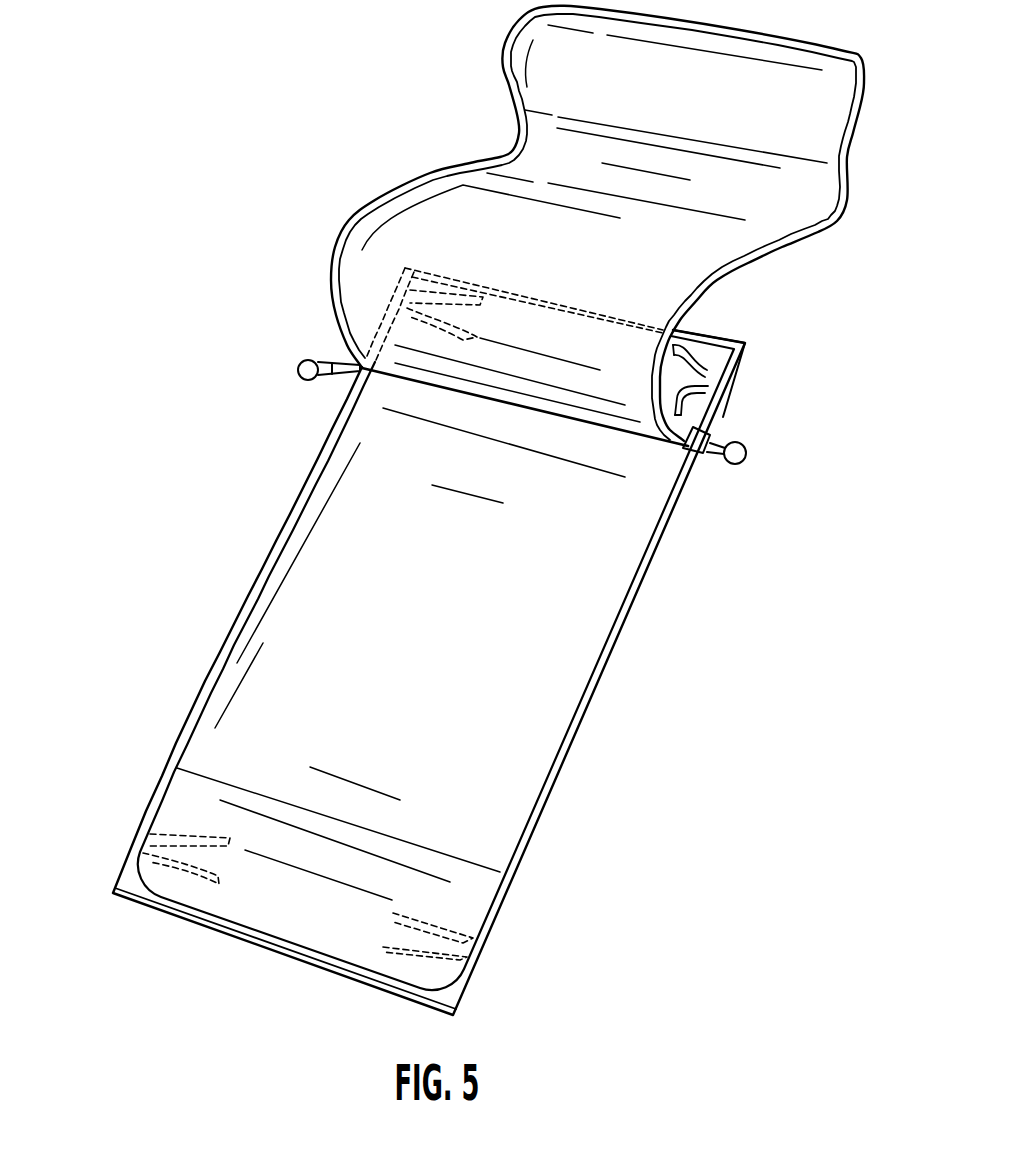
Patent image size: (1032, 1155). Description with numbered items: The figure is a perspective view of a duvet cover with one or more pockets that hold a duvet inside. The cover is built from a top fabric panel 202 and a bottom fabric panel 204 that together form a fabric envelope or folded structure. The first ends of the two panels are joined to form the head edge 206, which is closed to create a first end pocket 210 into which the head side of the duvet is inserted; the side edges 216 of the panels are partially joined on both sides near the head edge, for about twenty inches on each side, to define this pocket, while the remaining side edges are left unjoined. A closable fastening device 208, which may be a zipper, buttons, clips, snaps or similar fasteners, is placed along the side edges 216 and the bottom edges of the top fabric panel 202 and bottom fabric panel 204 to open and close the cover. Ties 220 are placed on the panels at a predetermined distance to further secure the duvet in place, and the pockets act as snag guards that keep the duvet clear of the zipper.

The top fabric panel 202 is at (803, 177).
The bottom fabric panel 204 is at (610, 530).
The head edge 206 is at (703, 340).
The closable fastening device 208 is at (297, 372).
The first end pocket 210 is at (612, 377).
The side edges 216 is at (262, 578).
The ties 220 is at (390, 298).